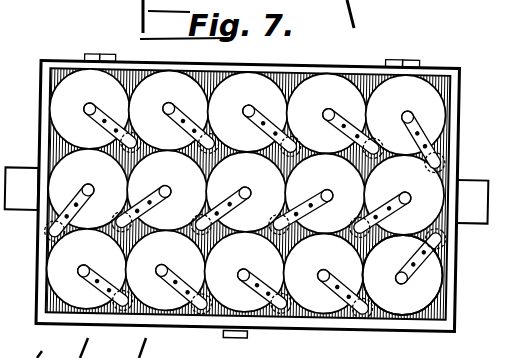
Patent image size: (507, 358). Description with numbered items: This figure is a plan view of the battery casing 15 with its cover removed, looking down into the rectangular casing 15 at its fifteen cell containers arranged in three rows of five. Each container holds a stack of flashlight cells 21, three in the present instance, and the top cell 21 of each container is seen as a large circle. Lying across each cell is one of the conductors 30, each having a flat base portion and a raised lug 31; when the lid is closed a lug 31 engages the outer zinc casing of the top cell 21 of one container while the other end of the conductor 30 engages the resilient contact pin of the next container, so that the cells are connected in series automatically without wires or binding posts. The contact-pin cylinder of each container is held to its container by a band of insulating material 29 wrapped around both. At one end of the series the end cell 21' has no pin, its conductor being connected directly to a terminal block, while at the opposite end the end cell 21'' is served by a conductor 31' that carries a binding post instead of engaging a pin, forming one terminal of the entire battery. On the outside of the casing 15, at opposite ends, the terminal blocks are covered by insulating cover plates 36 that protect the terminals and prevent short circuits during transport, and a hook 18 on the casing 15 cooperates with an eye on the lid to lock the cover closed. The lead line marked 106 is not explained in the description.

The conduit 106 is at (19, 18).
The casing 15 is at (309, 66).
The cover plate 36 is at (15, 167).
The hook 18 is at (249, 336).
The end cell 21' is at (107, 117).
The flashlight cell 21 is at (272, 163).
The end cell 21'' is at (403, 275).
The raised lug 31 is at (302, 200).
The conductor with binding post 31' is at (415, 257).
The conductor 30 is at (258, 112).
The band of insulating material 29 is at (124, 294).